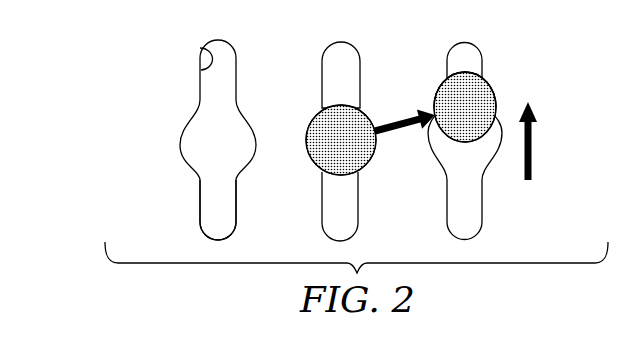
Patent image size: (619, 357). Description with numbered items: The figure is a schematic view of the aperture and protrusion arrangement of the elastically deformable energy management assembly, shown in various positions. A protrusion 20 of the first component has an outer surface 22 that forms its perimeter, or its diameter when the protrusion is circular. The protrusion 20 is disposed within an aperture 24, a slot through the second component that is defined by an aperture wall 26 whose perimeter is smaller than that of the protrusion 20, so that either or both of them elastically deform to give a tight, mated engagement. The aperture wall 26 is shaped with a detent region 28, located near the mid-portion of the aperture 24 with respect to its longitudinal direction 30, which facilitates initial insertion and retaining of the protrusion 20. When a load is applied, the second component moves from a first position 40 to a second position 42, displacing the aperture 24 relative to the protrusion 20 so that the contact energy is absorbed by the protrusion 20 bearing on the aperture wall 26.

The protrusion 20 is at (320, 130).
The outer surface 22 is at (462, 72).
The aperture 24 is at (195, 190).
The aperture wall 26 is at (200, 48).
The detent region 28 is at (183, 127).
The longitudinal direction 30 is at (533, 148).
The first position 40 is at (318, 216).
The second position 42 is at (488, 212).